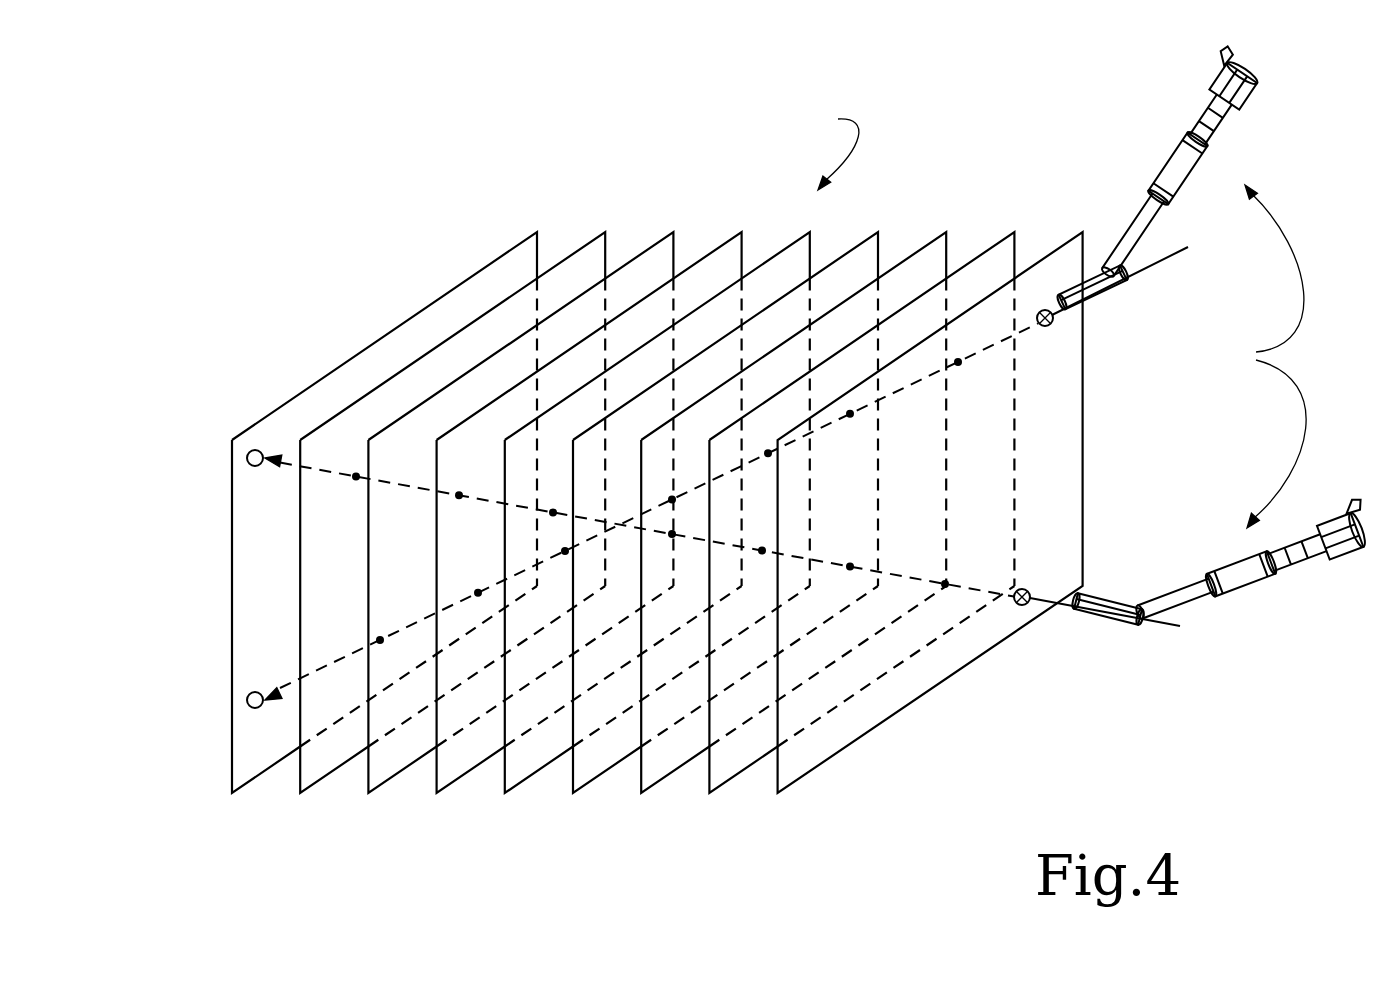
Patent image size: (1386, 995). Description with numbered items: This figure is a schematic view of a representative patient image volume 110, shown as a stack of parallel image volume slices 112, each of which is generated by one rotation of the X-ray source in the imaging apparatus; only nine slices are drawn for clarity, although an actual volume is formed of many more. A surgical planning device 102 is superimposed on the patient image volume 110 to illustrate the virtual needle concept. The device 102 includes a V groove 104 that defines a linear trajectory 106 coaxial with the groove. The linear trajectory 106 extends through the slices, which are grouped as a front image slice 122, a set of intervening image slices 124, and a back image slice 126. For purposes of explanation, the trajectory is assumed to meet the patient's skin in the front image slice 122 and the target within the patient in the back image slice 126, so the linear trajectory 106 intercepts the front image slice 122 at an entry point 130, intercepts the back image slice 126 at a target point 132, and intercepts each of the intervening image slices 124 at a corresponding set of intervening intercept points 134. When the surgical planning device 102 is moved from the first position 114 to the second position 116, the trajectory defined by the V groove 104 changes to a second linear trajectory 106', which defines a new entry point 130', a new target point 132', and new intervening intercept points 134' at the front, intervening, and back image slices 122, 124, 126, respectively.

The surgical planning device 102 is at (1255, 356).
The V groove 104 is at (1103, 297).
The linear trajectory 106 is at (1149, 281).
The second linear trajectory 106' is at (1105, 667).
The patient image volume 110 is at (825, 148).
The image volume slices 112 is at (737, 256).
The first position 114 is at (1170, 83).
The second position 116 is at (1286, 586).
The front image slice 122 is at (789, 778).
The intervening image slices 124 is at (292, 803).
The back image slice 126 is at (260, 752).
The entry point 130 is at (1006, 354).
The new entry point 130' is at (995, 668).
The target point 132 is at (601, 534).
The new target point 132' is at (591, 497).
The intervening intercept points 134 is at (566, 501).
The new intervening intercept points 134' is at (642, 436).